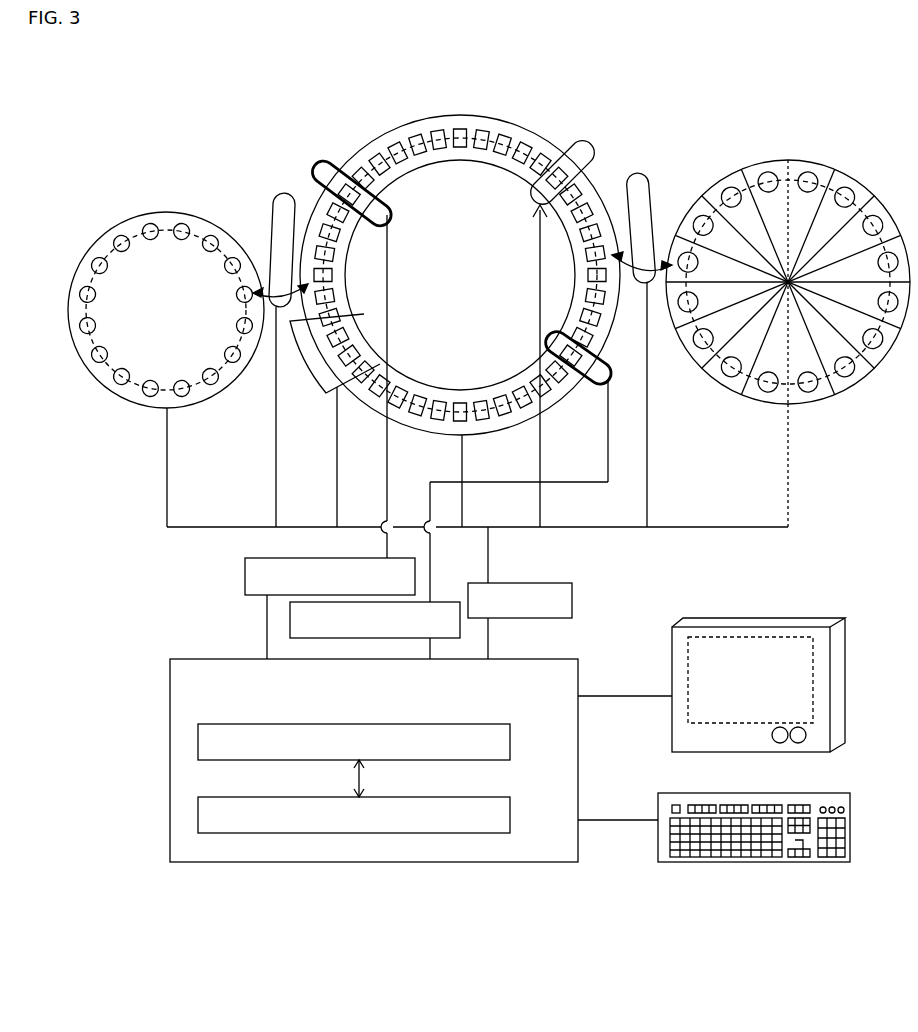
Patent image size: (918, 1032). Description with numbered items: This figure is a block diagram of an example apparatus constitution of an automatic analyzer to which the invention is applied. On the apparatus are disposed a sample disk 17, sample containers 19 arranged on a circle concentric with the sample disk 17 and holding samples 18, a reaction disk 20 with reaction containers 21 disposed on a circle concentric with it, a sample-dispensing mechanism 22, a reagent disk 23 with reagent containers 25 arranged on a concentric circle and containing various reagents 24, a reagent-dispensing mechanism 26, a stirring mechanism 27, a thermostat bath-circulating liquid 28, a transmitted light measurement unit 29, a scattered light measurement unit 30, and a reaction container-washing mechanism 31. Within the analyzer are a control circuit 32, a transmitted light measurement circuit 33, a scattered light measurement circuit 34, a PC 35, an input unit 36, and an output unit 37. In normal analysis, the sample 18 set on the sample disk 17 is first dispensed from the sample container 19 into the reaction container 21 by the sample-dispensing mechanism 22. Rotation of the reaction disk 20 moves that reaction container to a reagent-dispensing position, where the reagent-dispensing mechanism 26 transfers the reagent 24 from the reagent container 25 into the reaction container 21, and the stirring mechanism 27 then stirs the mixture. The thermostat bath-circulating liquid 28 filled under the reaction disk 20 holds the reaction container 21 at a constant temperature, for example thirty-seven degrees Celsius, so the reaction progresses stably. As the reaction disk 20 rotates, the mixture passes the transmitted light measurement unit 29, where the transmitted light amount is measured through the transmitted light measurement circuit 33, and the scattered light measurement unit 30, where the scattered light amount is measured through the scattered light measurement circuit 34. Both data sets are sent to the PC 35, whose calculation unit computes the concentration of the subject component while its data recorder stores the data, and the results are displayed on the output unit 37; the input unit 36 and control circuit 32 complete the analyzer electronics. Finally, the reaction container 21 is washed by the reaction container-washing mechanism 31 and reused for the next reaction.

The sample disk 17 is at (118, 225).
The sample 18 is at (186, 228).
The sample container 19 is at (152, 226).
The reaction disk 20 is at (435, 115).
The reaction container 21 is at (462, 129).
The sample-dispensing mechanism 22 is at (280, 193).
The reagent disk 23 is at (730, 172).
The reagent 24 is at (808, 172).
The reagent container 25 is at (768, 170).
The reagent-dispensing mechanism 26 is at (647, 193).
The stirring mechanism 27 is at (587, 140).
The thermostat bath-circulating liquid 28 is at (542, 147).
The transmitted light measurement unit 29 is at (330, 168).
The scattered light measurement unit 30 is at (593, 383).
The reaction container-washing mechanism 31 is at (318, 388).
The control circuit 32 is at (572, 590).
The transmitted light measurement circuit 33 is at (245, 577).
The scattered light measurement circuit 34 is at (290, 608).
The PC 35 is at (198, 705).
The input unit 36 is at (754, 817).
The output unit 37 is at (758, 674).